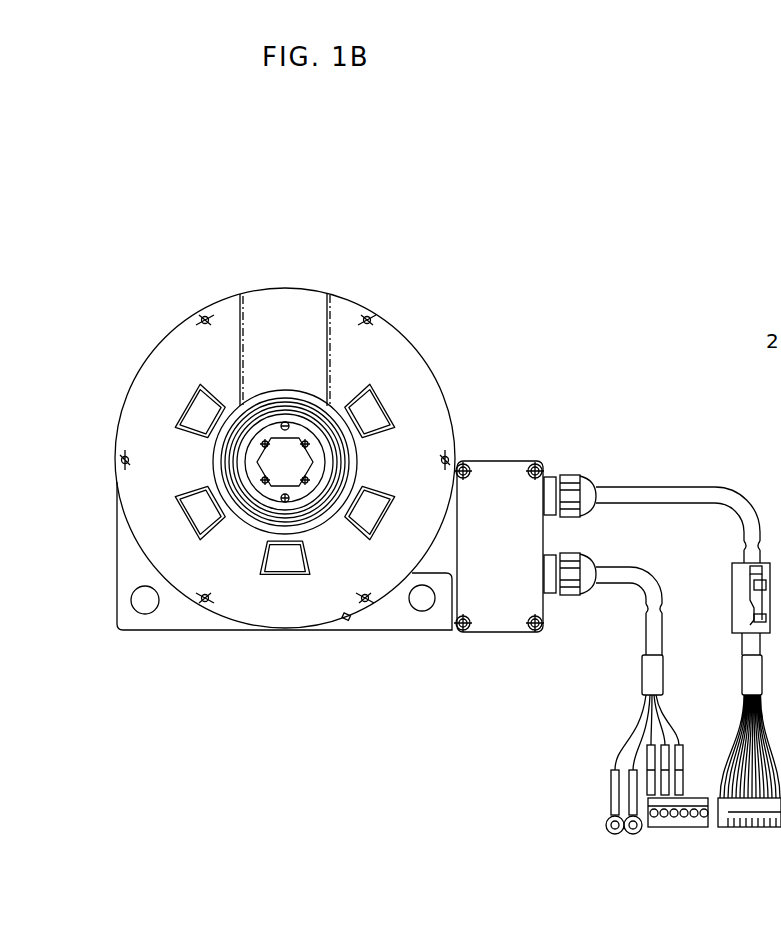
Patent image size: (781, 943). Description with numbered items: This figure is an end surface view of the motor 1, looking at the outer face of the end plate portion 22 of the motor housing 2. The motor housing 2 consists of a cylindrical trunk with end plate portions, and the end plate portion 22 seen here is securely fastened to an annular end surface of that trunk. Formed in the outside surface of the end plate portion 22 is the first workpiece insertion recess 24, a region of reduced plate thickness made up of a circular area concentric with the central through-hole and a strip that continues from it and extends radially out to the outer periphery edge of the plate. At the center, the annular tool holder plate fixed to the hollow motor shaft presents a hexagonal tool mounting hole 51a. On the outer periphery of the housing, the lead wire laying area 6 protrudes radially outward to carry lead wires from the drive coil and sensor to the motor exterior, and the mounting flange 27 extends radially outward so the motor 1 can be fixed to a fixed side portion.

In FIG. 1B, the motor 1 is at (286, 403).
In FIG. 1B, the motor housing 2 is at (387, 262).
The lead wire laying area 6 is at (497, 448).
The end plate portion 22 is at (437, 537).
In FIG. 1B, the first workpiece insertion recess 24 is at (292, 305).
The mounting flange 27 is at (168, 618).
In FIG. 1B, the hexagonal tool mounting hole 51a is at (273, 455).